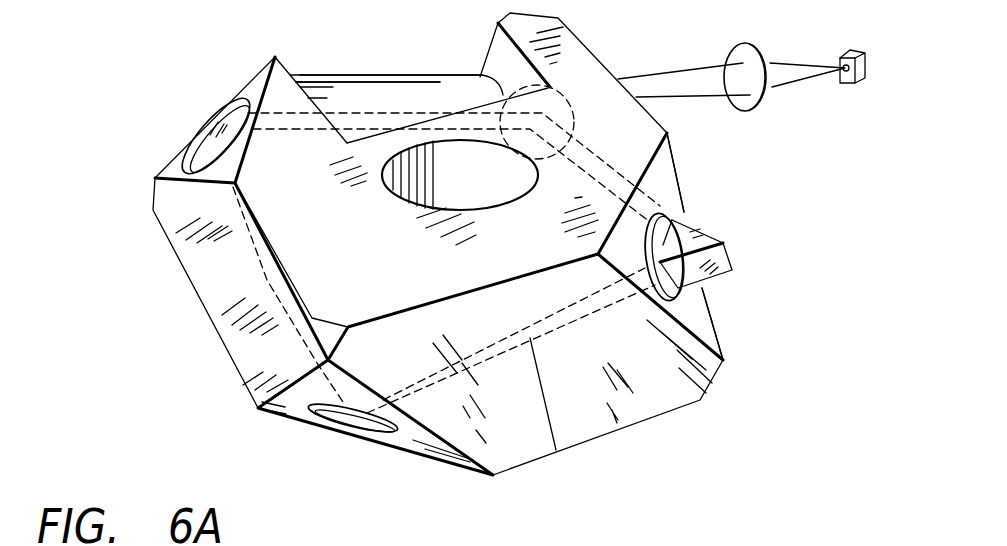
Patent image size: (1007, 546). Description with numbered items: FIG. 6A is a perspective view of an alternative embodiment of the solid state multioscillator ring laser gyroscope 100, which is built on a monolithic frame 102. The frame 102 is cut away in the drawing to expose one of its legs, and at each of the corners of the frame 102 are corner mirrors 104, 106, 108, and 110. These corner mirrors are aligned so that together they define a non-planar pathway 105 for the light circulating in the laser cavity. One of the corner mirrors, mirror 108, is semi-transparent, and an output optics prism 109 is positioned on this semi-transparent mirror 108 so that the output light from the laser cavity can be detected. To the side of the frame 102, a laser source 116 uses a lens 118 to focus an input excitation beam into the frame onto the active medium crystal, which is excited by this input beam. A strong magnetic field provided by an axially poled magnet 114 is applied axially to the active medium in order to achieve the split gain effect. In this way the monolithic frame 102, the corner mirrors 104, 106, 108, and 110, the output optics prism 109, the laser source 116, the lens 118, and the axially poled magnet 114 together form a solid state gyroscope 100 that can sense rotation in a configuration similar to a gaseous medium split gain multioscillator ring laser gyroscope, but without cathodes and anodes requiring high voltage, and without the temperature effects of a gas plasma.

The solid state ring laser gyroscope 100 is at (112, 186).
The monolithic frame 102 is at (678, 392).
The corner mirror 104 is at (197, 147).
The non-planar pathway 105 is at (556, 450).
The corner mirror 106 is at (350, 425).
The semi-transparent mirror 108 is at (682, 193).
The output optics prism 109 is at (717, 267).
The corner mirror 110 is at (572, 103).
The axially poled magnet 114 is at (427, 88).
The laser source 116 is at (853, 55).
The lens 118 is at (743, 45).